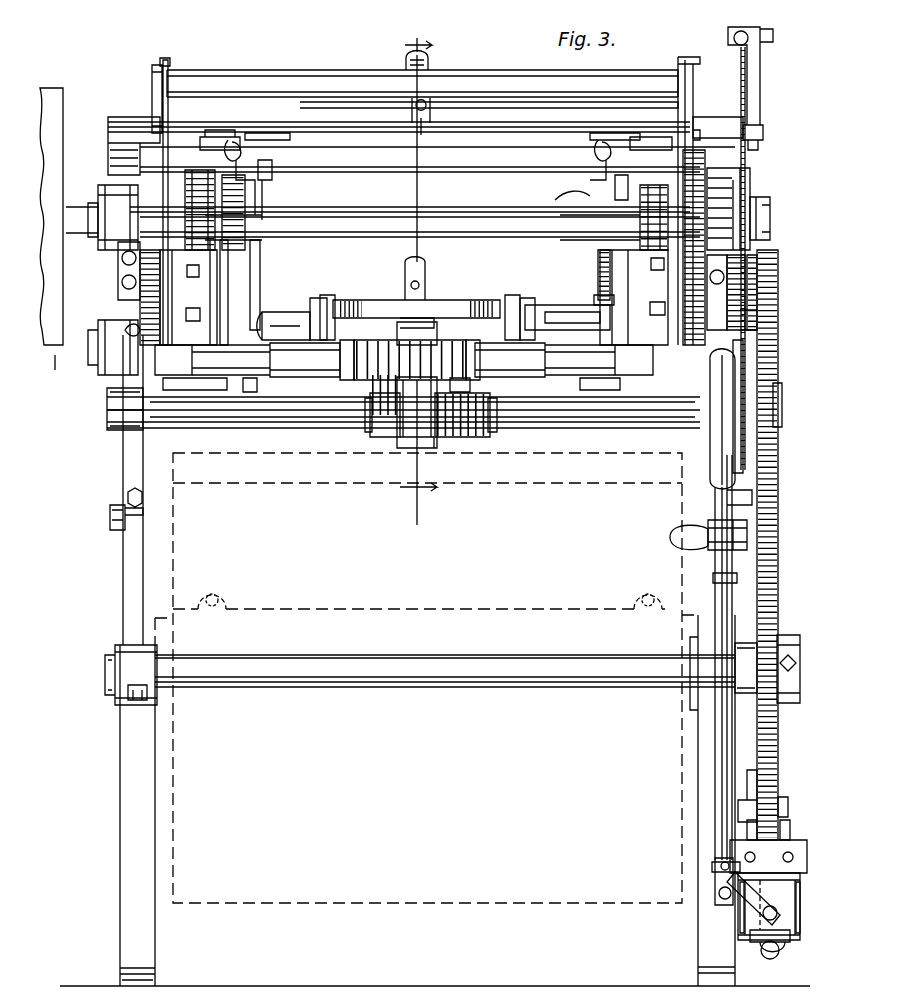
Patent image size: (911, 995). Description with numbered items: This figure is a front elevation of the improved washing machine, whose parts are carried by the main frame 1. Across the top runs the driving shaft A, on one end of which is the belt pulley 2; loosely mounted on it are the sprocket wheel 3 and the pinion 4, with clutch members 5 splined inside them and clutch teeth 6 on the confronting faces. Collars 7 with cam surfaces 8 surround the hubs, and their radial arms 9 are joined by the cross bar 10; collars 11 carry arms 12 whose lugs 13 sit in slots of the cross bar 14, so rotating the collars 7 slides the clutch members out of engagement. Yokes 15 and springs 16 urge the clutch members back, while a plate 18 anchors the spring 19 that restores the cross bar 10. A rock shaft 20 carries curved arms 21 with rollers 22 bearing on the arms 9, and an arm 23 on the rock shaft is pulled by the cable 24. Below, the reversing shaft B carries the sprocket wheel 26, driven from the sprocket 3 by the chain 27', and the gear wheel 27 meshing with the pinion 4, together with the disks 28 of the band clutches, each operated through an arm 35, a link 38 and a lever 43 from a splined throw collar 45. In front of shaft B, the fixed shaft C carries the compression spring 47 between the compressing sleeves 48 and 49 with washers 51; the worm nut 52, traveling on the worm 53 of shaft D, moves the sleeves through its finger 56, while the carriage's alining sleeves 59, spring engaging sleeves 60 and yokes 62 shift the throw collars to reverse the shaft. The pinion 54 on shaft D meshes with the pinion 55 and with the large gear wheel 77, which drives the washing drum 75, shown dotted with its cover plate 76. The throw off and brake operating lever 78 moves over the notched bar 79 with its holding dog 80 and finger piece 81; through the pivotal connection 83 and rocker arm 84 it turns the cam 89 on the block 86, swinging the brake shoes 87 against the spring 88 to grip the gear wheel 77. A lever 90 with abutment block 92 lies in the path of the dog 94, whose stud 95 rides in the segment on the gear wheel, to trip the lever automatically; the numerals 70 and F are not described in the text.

The main frame 1 is at (120, 752).
The belt pulley 2 is at (62, 108).
The sprocket wheel 3 is at (125, 185).
The pinion 4 is at (700, 215).
The clutch member 5 is at (80, 220).
The clutch teeth 6 is at (800, 320).
The collar 7 is at (418, 269).
The cam surface 8 is at (235, 230).
The radial arm 9 is at (175, 128).
The cross bar 10 is at (478, 75).
The collar 11 is at (285, 150).
The radial arm 12 is at (420, 297).
The lug 13 is at (224, 110).
The cross bar 14 is at (248, 128).
The yoke 15 is at (563, 189).
The spring 16 is at (244, 158).
The plate 18 is at (432, 115).
The spring 19 is at (430, 60).
The rock shaft 20 is at (518, 125).
The curved arm 21 is at (152, 85).
The roller 22 is at (170, 62).
The arm 23 is at (752, 95).
The cable 24 is at (746, 165).
The sprocket wheel 26 is at (150, 312).
The gear wheel 27 is at (755, 292).
The chain 27' is at (116, 324).
The disk 28 is at (228, 278).
The arm 35 is at (598, 272).
The link 38 is at (594, 298).
The lever 43 is at (280, 306).
The throw collar 45 is at (318, 295).
The compression spring 47 is at (375, 395).
The compressing sleeve 48 is at (262, 370).
The compressing sleeve 49 is at (562, 370).
The washer 51 is at (340, 356).
The worm nut 52 is at (407, 445).
The worm 53 is at (460, 440).
The pinion 54 is at (778, 440).
The pinion 55 is at (778, 305).
The finger 56 is at (420, 340).
The sleeve 59 is at (404, 360).
The spring engaging sleeve 60 is at (407, 360).
The yoke 62 is at (335, 300).
The slide 70 is at (372, 300).
The washing drum 75 is at (282, 895).
The cover plate 76 is at (352, 605).
The gear wheel 77 is at (755, 580).
The throw off and brake operating lever 78 is at (712, 400).
The notched bar 79 is at (712, 690).
The holding dog 80 is at (712, 578).
The finger piece 81 is at (690, 480).
The pivotal connection 83 is at (715, 890).
The rocker arm 84 is at (740, 888).
The block 86 is at (768, 856).
The brake shoe 87 is at (748, 830).
The spring 88 is at (780, 950).
The cam 89 is at (773, 901).
The lever 90 is at (680, 525).
The abutment block 92 is at (748, 528).
The dog 94 is at (760, 778).
The stud 95 is at (788, 805).
The shaft A is at (330, 200).
The shaft B is at (515, 300).
The shaft C is at (530, 415).
The shaft D is at (560, 425).
The bar F is at (520, 665).